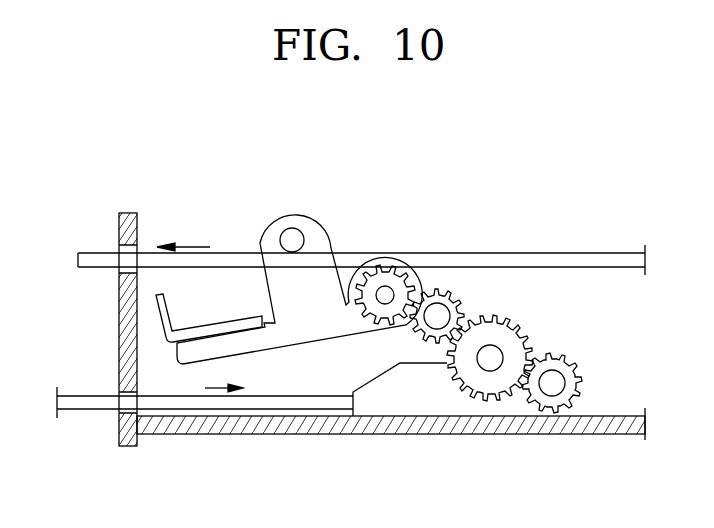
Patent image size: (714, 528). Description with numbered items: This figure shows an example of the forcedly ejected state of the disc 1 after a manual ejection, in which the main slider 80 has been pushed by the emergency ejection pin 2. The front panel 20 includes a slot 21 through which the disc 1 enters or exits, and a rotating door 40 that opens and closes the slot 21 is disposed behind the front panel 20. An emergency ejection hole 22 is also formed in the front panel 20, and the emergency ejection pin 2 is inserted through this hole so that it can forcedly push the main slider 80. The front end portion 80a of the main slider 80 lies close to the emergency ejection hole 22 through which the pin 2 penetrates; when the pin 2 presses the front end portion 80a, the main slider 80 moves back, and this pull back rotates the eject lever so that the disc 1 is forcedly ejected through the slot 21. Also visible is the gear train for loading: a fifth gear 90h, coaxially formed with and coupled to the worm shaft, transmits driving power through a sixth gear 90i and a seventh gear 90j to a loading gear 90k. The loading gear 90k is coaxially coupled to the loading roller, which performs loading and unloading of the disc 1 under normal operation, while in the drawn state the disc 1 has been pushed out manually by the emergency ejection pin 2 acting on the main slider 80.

The disc 1 is at (80, 258).
The emergency ejection pin 2 is at (83, 403).
The front panel 20 is at (126, 308).
The slot 21 is at (118, 250).
The emergency ejection hole 22 is at (118, 392).
The rotating door 40 is at (168, 320).
The main slider 80 is at (415, 403).
The front end portion 80a is at (342, 420).
The fifth gear 90h is at (567, 360).
The sixth gear 90i is at (510, 320).
The seventh gear 90j is at (447, 292).
The loading gear 90k is at (390, 280).